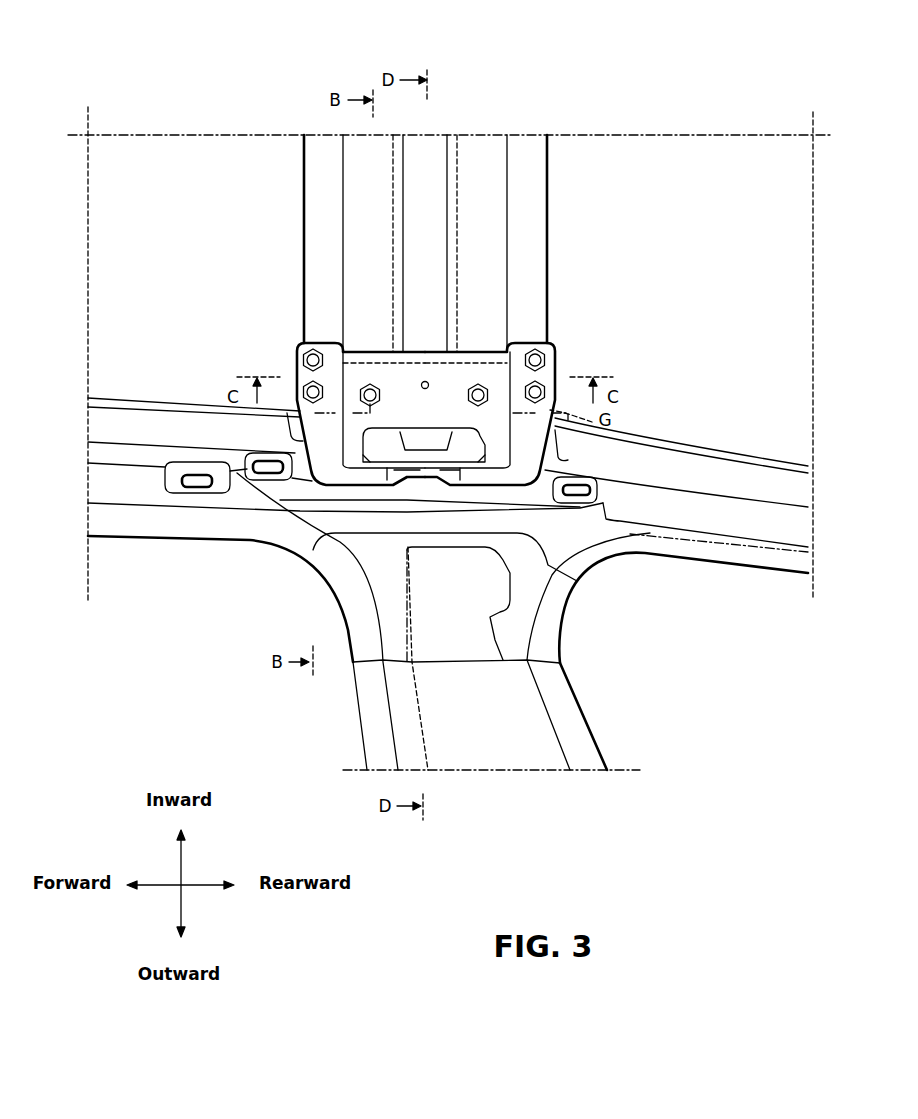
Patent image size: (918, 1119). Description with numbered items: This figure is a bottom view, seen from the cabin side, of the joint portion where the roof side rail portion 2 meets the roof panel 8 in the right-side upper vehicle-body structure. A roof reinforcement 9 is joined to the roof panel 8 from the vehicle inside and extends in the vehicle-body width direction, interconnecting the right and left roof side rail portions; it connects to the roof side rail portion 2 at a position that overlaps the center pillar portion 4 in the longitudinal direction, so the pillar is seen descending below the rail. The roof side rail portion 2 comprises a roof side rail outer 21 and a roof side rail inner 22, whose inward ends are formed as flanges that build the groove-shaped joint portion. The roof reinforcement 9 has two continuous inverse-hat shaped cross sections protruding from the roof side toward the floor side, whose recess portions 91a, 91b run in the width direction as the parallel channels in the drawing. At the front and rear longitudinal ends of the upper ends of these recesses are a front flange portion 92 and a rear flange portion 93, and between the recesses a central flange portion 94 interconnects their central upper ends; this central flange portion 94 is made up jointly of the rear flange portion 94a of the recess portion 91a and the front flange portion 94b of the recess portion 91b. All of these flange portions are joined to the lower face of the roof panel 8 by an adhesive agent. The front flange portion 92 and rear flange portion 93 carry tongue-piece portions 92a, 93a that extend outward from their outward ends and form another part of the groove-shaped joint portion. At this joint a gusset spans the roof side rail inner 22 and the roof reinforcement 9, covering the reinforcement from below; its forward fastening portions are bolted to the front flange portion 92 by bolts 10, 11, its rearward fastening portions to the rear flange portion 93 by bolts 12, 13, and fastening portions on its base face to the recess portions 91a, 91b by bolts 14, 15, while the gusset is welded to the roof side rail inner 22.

The roof side rail portion 2 is at (123, 537).
The center pillar portion 4 is at (577, 698).
The roof panel 8 is at (700, 155).
The roof reinforcement 9 is at (549, 165).
The bolt 10 is at (297, 360).
The bolt 11 is at (310, 350).
The bolt 12 is at (555, 360).
The bolt 13 is at (545, 332).
The bolt 14 is at (368, 384).
The bolt 15 is at (476, 384).
The roof side rail outer 21 is at (170, 540).
The roof side rail inner 22 is at (232, 497).
The recess portion 91a is at (355, 143).
The recess portion 91b is at (487, 143).
The front flange portion 92 is at (315, 160).
The tongue-piece portion 92a is at (330, 452).
The rear flange portion 93 is at (538, 143).
The tongue-piece portion 93a is at (540, 507).
The central flange portion 94 is at (520, 46).
The rear flange portion of the recess portion 94a is at (413, 143).
The front flange portion of the recess portion 94b is at (440, 143).